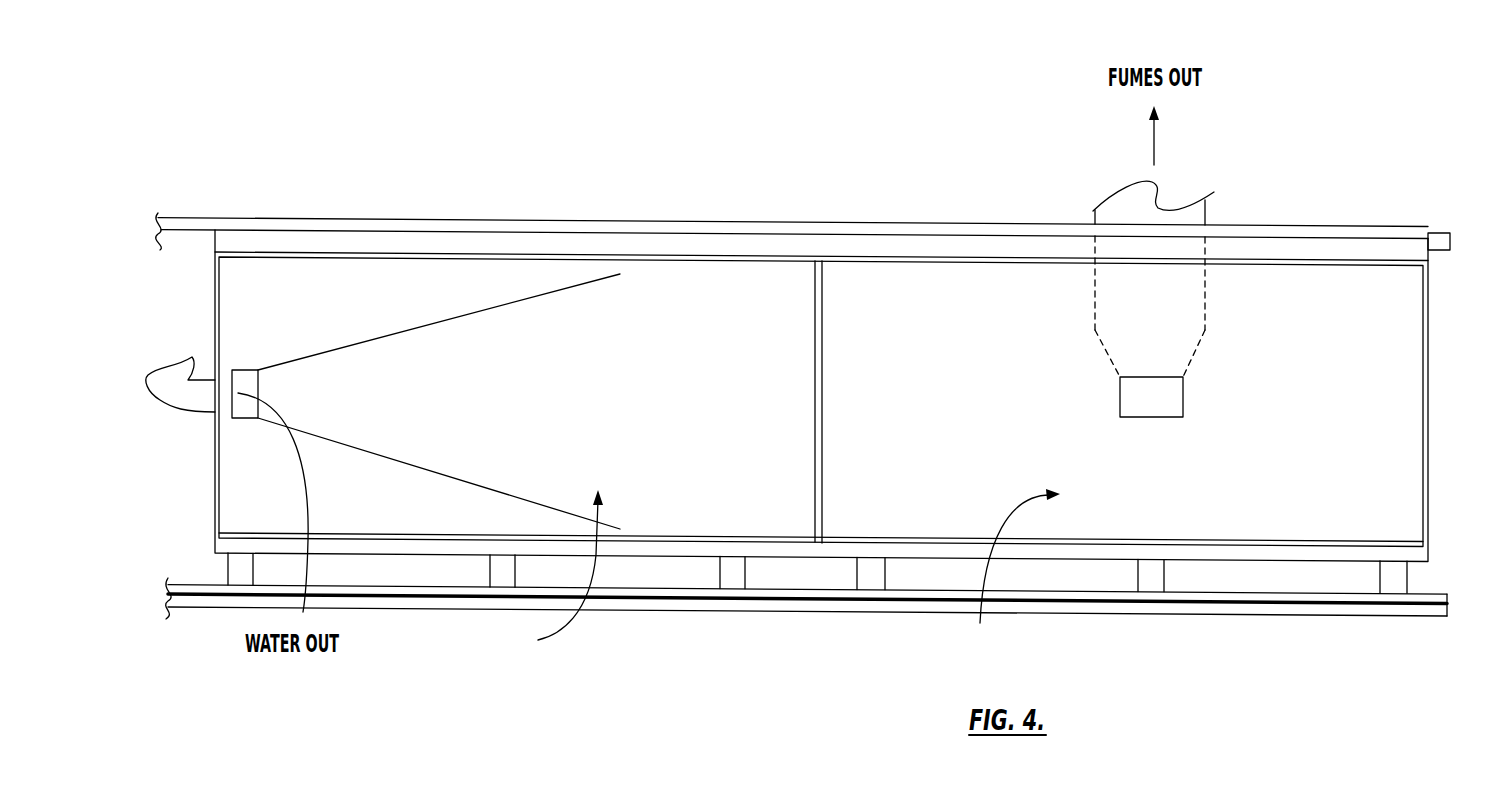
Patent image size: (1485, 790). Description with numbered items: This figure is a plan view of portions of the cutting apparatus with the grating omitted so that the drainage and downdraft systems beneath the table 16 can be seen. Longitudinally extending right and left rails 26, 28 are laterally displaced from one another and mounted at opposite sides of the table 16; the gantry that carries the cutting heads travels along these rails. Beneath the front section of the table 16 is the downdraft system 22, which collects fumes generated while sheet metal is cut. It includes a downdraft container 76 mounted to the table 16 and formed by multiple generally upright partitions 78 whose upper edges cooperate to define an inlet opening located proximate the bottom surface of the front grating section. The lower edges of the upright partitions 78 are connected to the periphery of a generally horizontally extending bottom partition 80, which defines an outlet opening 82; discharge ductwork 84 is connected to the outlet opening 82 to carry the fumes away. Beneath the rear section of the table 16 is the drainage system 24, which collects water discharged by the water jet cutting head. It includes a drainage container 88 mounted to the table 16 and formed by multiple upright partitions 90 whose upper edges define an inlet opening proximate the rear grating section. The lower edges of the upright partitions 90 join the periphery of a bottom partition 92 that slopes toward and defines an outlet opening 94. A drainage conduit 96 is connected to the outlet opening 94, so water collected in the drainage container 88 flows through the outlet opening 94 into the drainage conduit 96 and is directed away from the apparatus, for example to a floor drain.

The table 16 is at (1410, 572).
The downdraft system 22 is at (1250, 212).
The drainage system 24 is at (168, 282).
The right rail 26 is at (584, 221).
The left rail 28 is at (400, 582).
The downdraft container 76 is at (1015, 576).
The upright partitions 78 is at (983, 262).
The bottom partition 80 is at (921, 398).
The outlet opening 82 is at (1183, 406).
The discharge ductwork 84 is at (1093, 216).
The drainage container 88 is at (556, 574).
The upright partitions 90 is at (220, 285).
The bottom partition 92 is at (677, 394).
The outlet opening 94 is at (250, 418).
The drainage conduit 96 is at (215, 412).